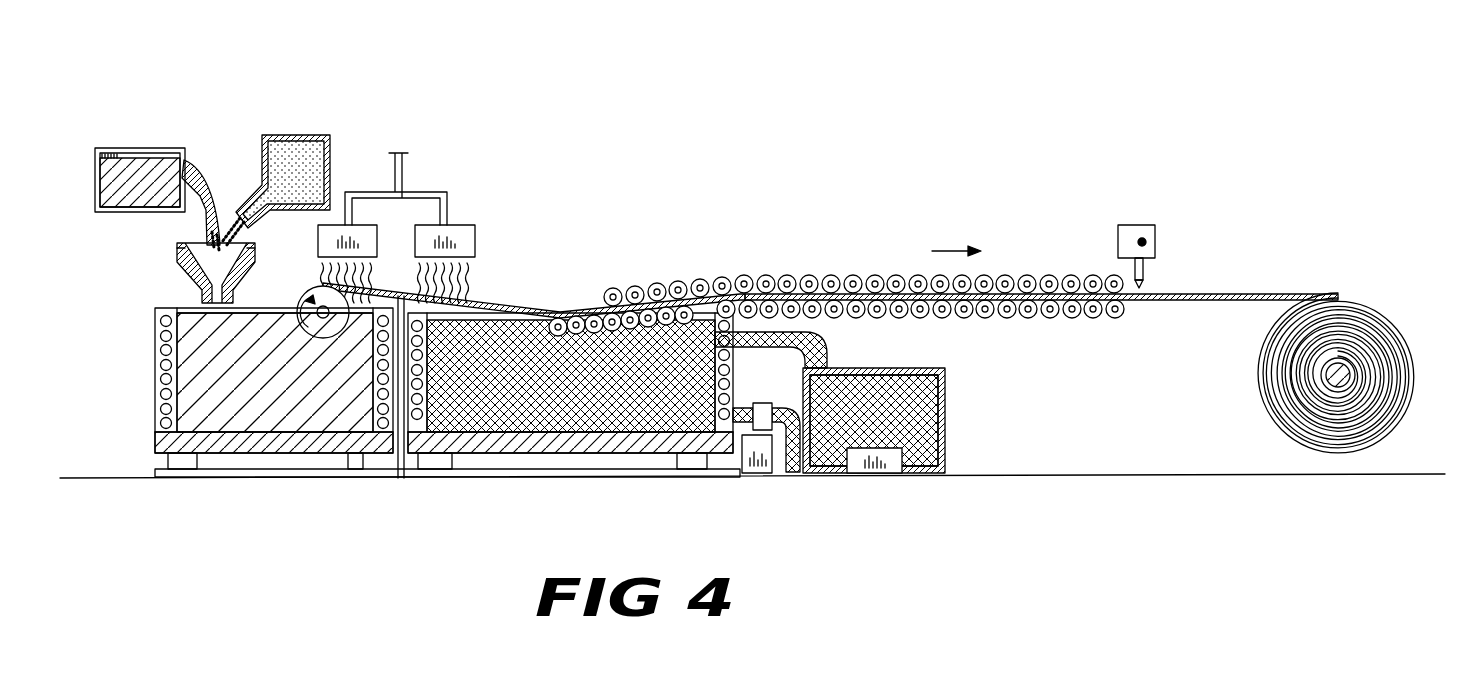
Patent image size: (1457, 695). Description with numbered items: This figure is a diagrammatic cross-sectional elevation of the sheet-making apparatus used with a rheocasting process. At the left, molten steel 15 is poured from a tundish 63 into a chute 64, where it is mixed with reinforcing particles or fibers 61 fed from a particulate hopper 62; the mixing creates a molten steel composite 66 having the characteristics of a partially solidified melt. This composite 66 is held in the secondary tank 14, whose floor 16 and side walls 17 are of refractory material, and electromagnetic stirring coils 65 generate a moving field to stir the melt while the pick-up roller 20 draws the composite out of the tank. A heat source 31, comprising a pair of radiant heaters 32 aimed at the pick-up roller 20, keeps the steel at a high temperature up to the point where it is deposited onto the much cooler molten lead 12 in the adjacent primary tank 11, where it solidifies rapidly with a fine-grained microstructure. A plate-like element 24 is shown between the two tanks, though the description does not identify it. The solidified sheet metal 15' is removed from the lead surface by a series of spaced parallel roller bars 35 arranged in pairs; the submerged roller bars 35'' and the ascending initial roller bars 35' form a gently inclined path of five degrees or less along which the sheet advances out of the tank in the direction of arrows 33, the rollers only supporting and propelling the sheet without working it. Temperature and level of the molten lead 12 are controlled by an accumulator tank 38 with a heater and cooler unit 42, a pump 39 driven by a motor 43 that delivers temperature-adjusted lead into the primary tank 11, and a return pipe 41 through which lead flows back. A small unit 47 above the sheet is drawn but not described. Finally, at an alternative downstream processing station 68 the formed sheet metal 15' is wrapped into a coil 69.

The primary tank 11 is at (606, 464).
The molten lead 12 is at (571, 376).
The secondary tank 14 is at (318, 464).
The molten steel 15 is at (463, 221).
The sheet metal 15' is at (1041, 261).
The floor 16 is at (216, 455).
The side walls 17 is at (156, 404).
The pick-up roller 20 is at (300, 298).
The partition plate 24 is at (399, 296).
The heat source 31 is at (412, 176).
The radiant heaters 32 is at (318, 238).
The arrows 33 is at (946, 251).
The roller bars 35 is at (920, 260).
The initial roller bars 35' is at (863, 255).
The submerged roller bars 35'' is at (621, 283).
The accumulator tank 38 is at (946, 410).
The pump 39 is at (758, 404).
The return pipe 41 is at (830, 340).
The heater and cooler unit 42 is at (882, 474).
The motor 43 is at (755, 475).
The sensor 47 is at (1120, 232).
The reinforcing particles or fibers 61 is at (331, 190).
The particulate hopper 62 is at (330, 168).
The tundish 63 is at (190, 158).
The chute 64 is at (177, 255).
The electromagnetic stirring coils 65 is at (158, 345).
The molten steel composite 66 is at (297, 387).
The downstream processing station 68 is at (1363, 287).
The coil 69 is at (1386, 432).